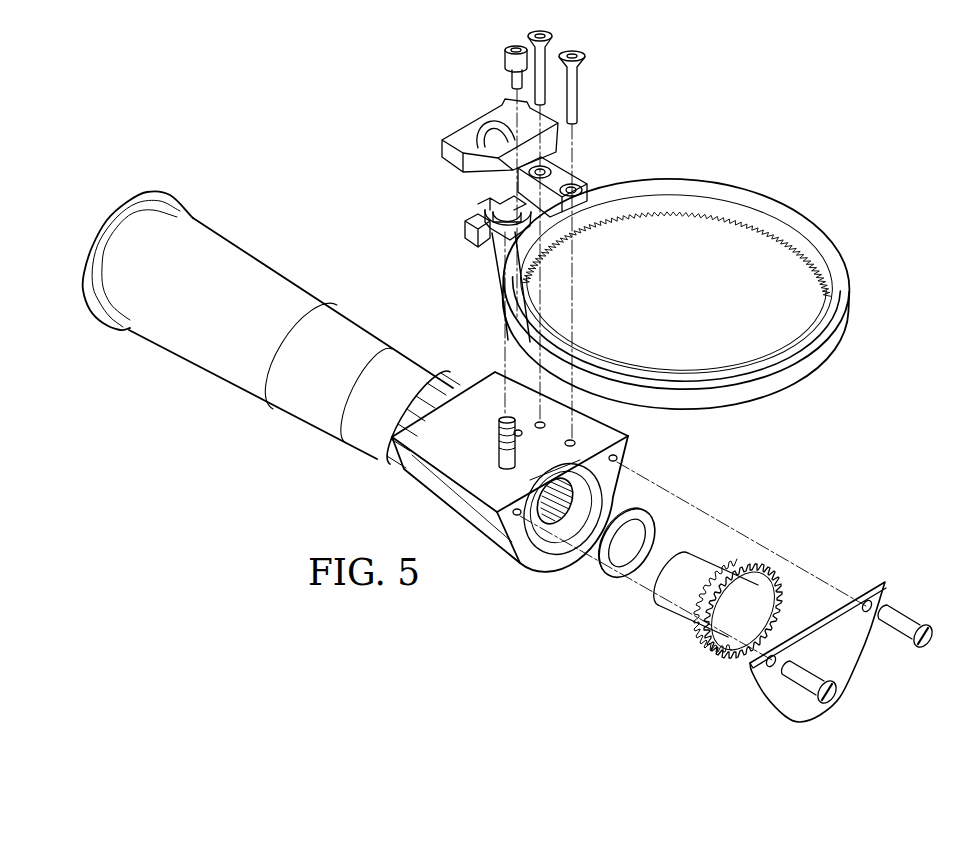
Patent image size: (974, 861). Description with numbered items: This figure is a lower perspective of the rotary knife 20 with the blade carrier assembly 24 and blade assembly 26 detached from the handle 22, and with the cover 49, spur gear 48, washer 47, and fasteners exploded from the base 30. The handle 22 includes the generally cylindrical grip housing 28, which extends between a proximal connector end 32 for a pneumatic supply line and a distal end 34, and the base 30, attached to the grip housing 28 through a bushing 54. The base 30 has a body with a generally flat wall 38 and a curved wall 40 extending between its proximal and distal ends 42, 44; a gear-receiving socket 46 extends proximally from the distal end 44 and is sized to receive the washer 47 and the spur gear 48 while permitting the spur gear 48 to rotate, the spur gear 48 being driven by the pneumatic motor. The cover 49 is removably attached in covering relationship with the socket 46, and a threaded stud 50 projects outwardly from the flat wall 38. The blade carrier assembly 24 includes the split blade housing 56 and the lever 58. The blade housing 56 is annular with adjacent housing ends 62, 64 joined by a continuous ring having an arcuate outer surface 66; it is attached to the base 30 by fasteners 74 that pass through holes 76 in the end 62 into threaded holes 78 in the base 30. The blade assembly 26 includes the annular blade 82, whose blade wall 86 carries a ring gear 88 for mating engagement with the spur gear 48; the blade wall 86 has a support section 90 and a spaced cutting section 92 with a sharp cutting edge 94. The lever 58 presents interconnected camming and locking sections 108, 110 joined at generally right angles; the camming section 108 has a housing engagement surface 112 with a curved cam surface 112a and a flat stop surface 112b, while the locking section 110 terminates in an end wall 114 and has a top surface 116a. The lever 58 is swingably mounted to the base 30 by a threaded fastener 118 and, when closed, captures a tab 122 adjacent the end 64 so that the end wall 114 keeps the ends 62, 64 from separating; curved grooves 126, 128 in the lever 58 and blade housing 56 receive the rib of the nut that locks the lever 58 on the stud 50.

The rotary knife 20 is at (268, 116).
The handle 22 is at (264, 292).
The blade carrier assembly 24 is at (596, 186).
The rotating blade assembly 26 is at (705, 272).
The grip housing 28 is at (178, 334).
The base 30 is at (463, 500).
The proximal connector end 32 is at (119, 173).
The distal end 34 is at (409, 311).
The flat wall 38 is at (470, 385).
The curved wall 40 is at (490, 540).
The proximal end 42 is at (322, 459).
The distal end 44 is at (684, 460).
The gear-receiving socket 46 is at (608, 502).
The washer 47 is at (655, 522).
The spur gear 48 is at (776, 577).
The cover 49 is at (842, 668).
The threaded stud 50 is at (500, 445).
The bushing 54 is at (420, 370).
The split blade housing 56 is at (705, 272).
The lever 58 is at (455, 130).
The housing end 62 is at (580, 153).
The housing end 64 is at (490, 240).
The arcuate outer surface 66 is at (802, 219).
The fasteners 74 is at (562, 36).
The holes 76 is at (516, 176).
The threaded holes 78 is at (545, 425).
The annular blade 82 is at (720, 192).
The blade wall 86 is at (774, 210).
The ring gear 88 is at (772, 238).
The support section 90 is at (692, 186).
The cutting section 92 is at (745, 200).
The sharp cutting edge 94 is at (830, 234).
The camming section 108 is at (580, 153).
The locking section 110 is at (455, 130).
The housing engagement surface 112 is at (455, 130).
The curved cam surface 112a is at (482, 125).
The stop surface 112b is at (566, 160).
The end wall 114 is at (455, 130).
The top surface 116a is at (455, 130).
The threaded fastener 118 is at (506, 62).
The tab 122 is at (470, 223).
The curved groove 126 is at (500, 128).
The curved groove 128 is at (482, 214).